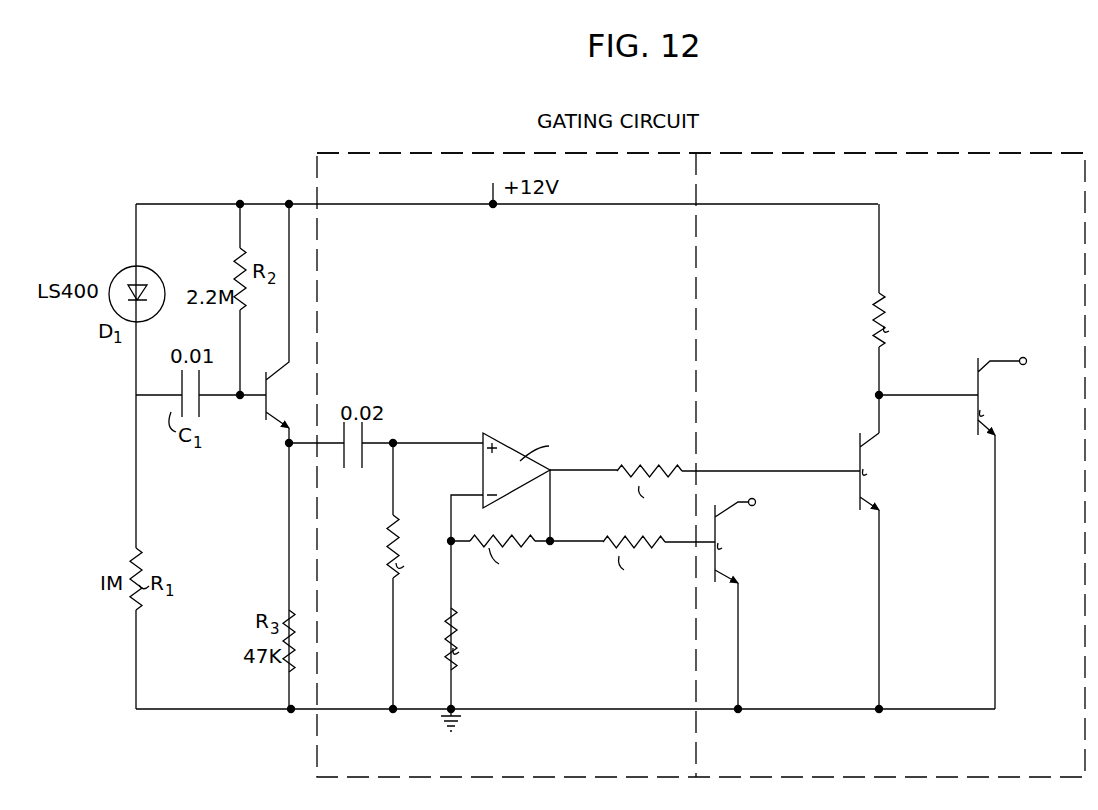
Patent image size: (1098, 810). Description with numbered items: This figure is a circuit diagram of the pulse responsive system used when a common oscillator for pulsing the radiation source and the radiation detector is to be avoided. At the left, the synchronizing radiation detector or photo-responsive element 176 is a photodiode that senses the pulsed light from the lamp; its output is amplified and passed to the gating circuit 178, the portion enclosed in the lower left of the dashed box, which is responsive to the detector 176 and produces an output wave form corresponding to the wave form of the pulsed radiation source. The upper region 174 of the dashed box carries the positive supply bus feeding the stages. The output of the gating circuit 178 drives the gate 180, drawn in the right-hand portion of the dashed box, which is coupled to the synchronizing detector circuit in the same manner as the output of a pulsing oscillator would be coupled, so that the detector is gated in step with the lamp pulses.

The synchronizing radiation detector 176 is at (150, 280).
The power supply section of gating circuit 174 is at (488, 301).
The gating circuit 178 is at (578, 761).
The gate 180 is at (922, 766).